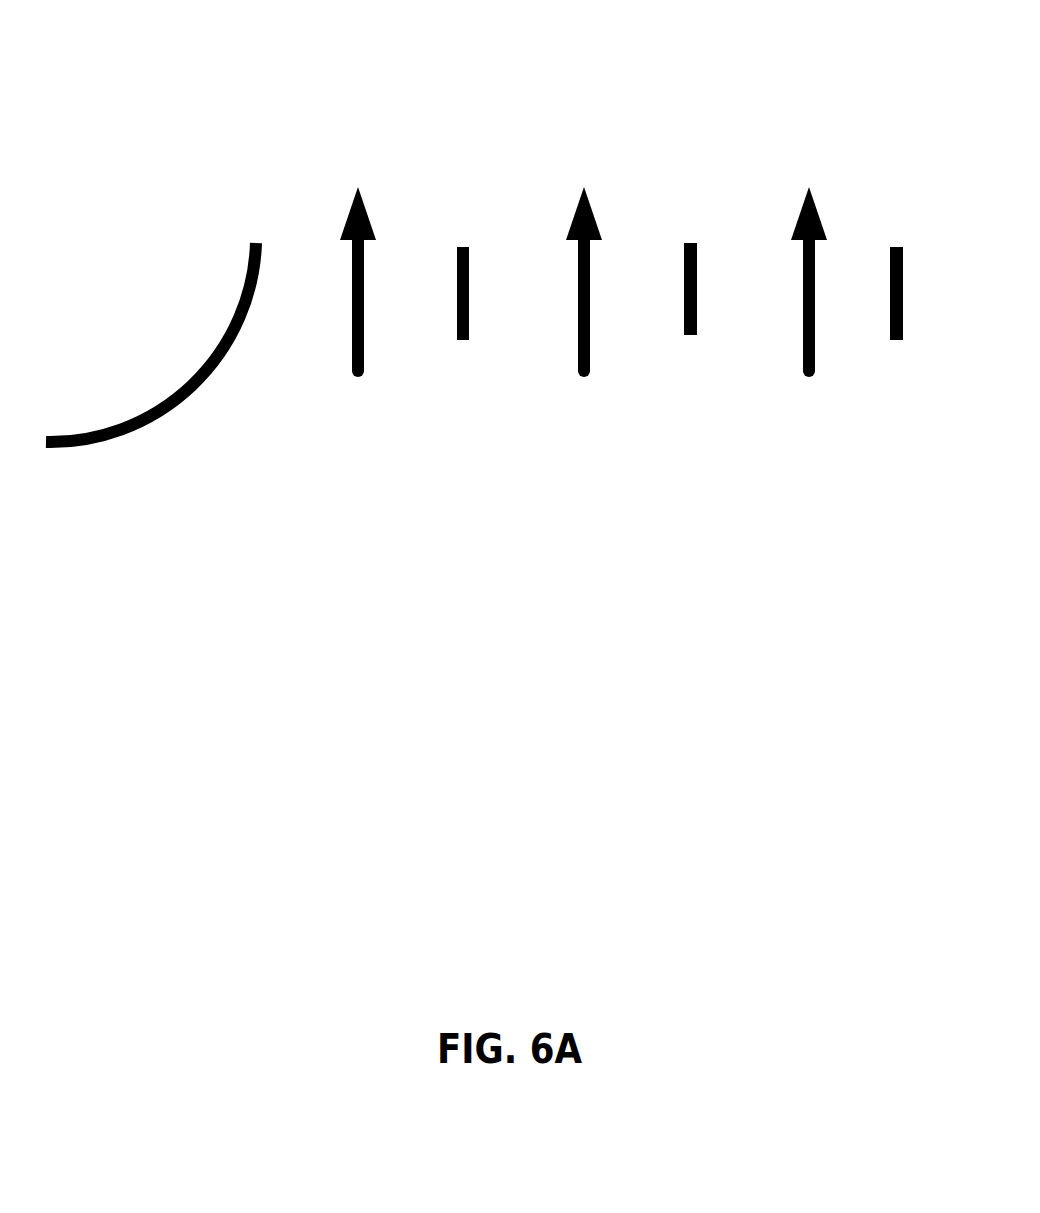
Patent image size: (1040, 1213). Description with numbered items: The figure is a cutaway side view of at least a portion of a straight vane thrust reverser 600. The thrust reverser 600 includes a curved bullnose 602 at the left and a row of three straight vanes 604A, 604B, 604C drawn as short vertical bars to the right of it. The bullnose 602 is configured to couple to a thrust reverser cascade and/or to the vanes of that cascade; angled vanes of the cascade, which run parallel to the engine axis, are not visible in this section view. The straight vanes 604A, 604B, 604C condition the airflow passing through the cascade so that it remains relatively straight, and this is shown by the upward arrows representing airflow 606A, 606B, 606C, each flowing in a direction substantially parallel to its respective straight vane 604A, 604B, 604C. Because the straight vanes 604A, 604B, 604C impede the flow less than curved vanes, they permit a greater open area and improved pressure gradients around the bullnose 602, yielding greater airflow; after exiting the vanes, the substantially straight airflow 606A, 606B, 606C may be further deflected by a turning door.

The thrust reverser 600 is at (172, 92).
The bullnose 602 is at (190, 395).
The straight vane 604A is at (462, 245).
The straight vane 604B is at (689, 242).
The straight vane 604C is at (892, 245).
The airflow 606A is at (360, 378).
The airflow 606B is at (586, 378).
The airflow 606C is at (811, 378).